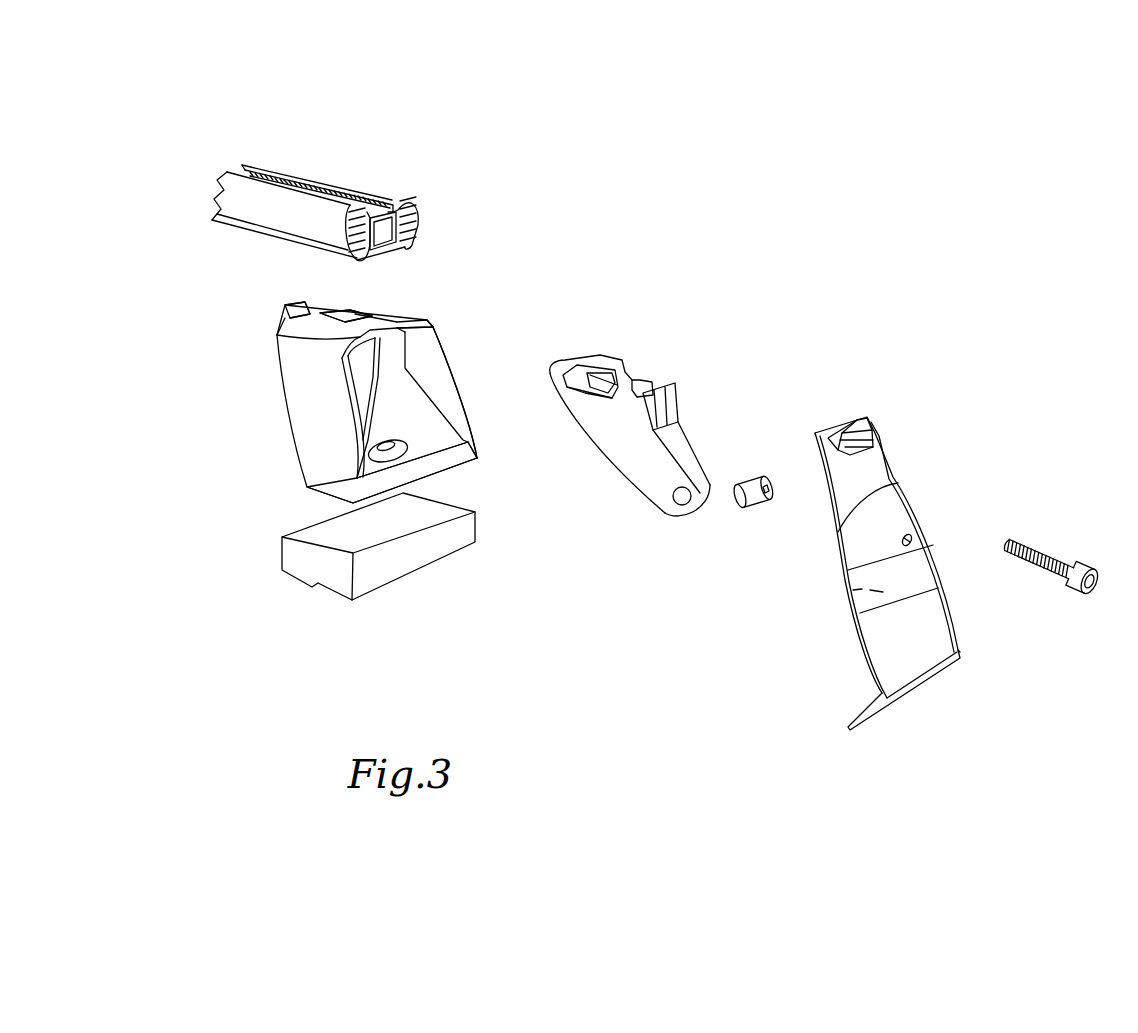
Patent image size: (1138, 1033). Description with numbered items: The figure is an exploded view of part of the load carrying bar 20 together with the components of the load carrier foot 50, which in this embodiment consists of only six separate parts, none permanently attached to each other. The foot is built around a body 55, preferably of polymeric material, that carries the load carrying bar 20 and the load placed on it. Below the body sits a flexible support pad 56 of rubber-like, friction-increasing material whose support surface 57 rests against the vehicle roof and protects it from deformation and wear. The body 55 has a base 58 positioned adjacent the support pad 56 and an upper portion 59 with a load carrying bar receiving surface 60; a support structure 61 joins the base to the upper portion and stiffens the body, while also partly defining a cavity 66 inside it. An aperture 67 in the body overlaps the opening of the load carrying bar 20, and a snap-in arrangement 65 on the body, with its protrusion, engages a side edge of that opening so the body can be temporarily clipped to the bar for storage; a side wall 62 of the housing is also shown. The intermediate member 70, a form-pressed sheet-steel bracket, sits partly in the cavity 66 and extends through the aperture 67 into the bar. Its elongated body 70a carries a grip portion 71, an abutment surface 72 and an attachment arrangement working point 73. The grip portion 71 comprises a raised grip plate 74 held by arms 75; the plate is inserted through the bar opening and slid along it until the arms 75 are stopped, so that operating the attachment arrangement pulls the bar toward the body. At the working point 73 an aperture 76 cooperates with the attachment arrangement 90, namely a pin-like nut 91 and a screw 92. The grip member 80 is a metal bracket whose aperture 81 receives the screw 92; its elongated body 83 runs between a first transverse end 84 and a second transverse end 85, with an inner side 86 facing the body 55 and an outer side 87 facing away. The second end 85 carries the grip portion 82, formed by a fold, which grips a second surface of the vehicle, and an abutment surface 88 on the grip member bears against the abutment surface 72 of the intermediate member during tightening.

The load carrying bar 20 is at (357, 166).
The load carrier foot 50 is at (684, 376).
The body 55 is at (355, 386).
The flexible support pad 56 is at (344, 566).
The support surface 57 is at (388, 583).
The base 58 is at (440, 465).
The upper portion 59 is at (288, 322).
The load carrying bar receiving surface 60 is at (383, 313).
The support structure 61 is at (357, 392).
The side wall 62 is at (393, 392).
The snap-in arrangement 65 is at (355, 372).
The cavity 66 is at (407, 407).
The aperture 67 is at (347, 322).
The intermediate member 70 is at (650, 420).
The elongated body 70a is at (630, 443).
The grip portion 71 is at (603, 337).
The abutment surface 72 is at (673, 390).
The attachment arrangement working point 73 is at (710, 495).
The grip plate 74 is at (597, 362).
The arm 75 is at (630, 375).
The aperture 76 is at (675, 497).
The grip member 80 is at (902, 582).
The aperture 81 is at (912, 540).
The grip portion 82 is at (864, 728).
The elongated body 83 is at (855, 630).
The first transverse end 84 is at (838, 428).
The second transverse end 85 is at (920, 685).
The inner side 86 is at (848, 597).
The outer side 87 is at (928, 618).
The abutment surface 88 is at (863, 713).
The attachment arrangement 90 is at (775, 457).
The nut 91 is at (765, 487).
The screw 92 is at (1060, 568).